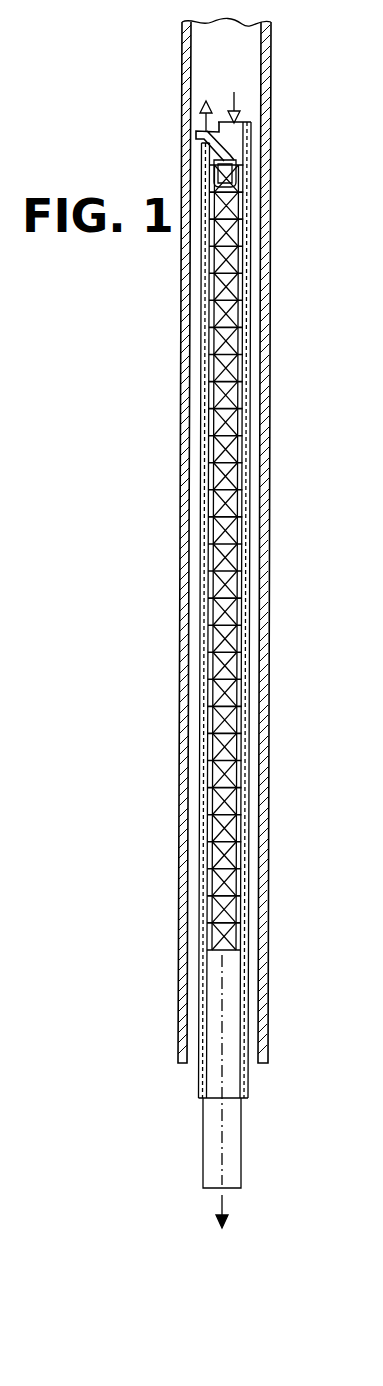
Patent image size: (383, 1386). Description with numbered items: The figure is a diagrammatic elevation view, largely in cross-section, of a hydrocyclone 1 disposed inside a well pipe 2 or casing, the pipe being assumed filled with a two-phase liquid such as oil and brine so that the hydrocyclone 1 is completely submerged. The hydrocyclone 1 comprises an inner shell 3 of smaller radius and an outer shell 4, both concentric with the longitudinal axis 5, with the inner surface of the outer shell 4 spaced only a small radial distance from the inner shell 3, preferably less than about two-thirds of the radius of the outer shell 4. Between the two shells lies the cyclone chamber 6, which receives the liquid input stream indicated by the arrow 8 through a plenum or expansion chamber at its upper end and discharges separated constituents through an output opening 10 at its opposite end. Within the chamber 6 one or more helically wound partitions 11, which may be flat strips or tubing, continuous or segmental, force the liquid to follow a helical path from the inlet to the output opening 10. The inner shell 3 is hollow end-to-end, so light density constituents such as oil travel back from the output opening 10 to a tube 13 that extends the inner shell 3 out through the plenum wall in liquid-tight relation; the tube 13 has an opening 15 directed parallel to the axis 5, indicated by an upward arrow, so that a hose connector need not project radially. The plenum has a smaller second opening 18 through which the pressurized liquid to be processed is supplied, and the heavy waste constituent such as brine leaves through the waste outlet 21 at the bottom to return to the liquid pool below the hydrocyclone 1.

The hydrocyclone 1 is at (228, 643).
The well pipe 2 is at (284, 727).
The inner shell 3 is at (242, 798).
The outer shell 4 is at (246, 866).
The longitudinal axis 5 is at (223, 1117).
The cyclone chamber 6 is at (246, 697).
The liquid input stream 8 is at (232, 108).
The output opening 10 is at (217, 958).
The helically wound partitions 11 is at (245, 332).
The tube 13 is at (200, 146).
The opening 15 is at (210, 128).
The second opening 18 is at (246, 123).
The waste outlet 21 is at (232, 1172).